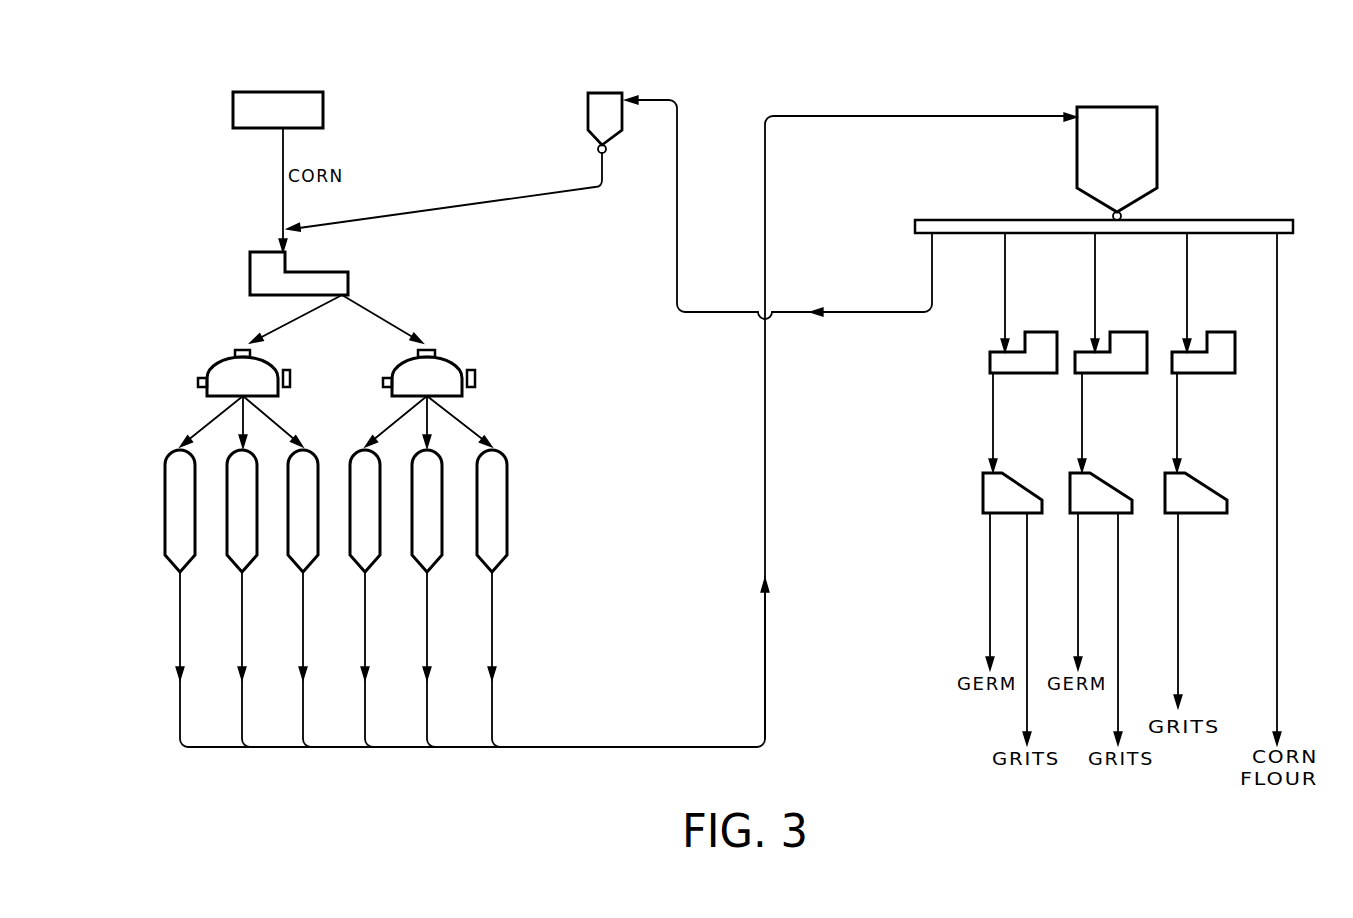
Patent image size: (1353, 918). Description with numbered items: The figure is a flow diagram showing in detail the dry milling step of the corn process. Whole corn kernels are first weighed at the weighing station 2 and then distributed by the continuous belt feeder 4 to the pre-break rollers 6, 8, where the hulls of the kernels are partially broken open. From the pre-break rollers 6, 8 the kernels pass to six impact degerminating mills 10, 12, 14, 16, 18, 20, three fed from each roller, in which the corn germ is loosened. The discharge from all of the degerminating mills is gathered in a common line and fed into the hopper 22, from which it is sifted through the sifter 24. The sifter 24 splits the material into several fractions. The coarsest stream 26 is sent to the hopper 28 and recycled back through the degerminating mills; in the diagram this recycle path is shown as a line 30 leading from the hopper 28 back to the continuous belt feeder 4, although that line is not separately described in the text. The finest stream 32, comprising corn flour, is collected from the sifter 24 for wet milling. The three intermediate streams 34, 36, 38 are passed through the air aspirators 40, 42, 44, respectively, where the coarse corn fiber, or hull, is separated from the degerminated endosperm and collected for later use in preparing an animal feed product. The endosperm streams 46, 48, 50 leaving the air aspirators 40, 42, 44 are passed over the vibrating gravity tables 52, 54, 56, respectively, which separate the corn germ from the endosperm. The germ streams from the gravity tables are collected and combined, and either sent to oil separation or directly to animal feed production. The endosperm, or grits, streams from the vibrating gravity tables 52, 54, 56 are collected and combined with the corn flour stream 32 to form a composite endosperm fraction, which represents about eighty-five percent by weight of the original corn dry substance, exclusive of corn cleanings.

The weighing station 2 is at (303, 92).
The continuous belt feeder 4 is at (250, 280).
The pre-break roller 6 is at (220, 365).
The pre-break roller 8 is at (450, 362).
The impact degerminating mill 10 is at (165, 524).
The impact degerminating mill 12 is at (227, 528).
The impact degerminating mill 14 is at (288, 528).
The impact degerminating mill 16 is at (350, 528).
The impact degerminating mill 18 is at (412, 530).
The impact degerminating mill 20 is at (508, 530).
The hopper 22 is at (1128, 107).
The sifter 24 is at (1278, 220).
The coarsest stream 26 is at (677, 225).
The hopper 28 is at (597, 93).
The recycle conduit 30 is at (443, 207).
The finest stream 32 is at (1278, 432).
The intermediate stream 34 is at (1008, 292).
The intermediate stream 36 is at (1097, 300).
The intermediate stream 38 is at (1190, 297).
The air aspirator 40 is at (1012, 373).
The air aspirator 42 is at (1112, 373).
The air aspirator 44 is at (1210, 373).
The endosperm stream 46 is at (993, 444).
The endosperm stream 48 is at (1082, 444).
The endosperm stream 50 is at (1177, 444).
The vibrating gravity table 52 is at (983, 500).
The vibrating gravity table 54 is at (1070, 505).
The vibrating gravity table 56 is at (1165, 505).